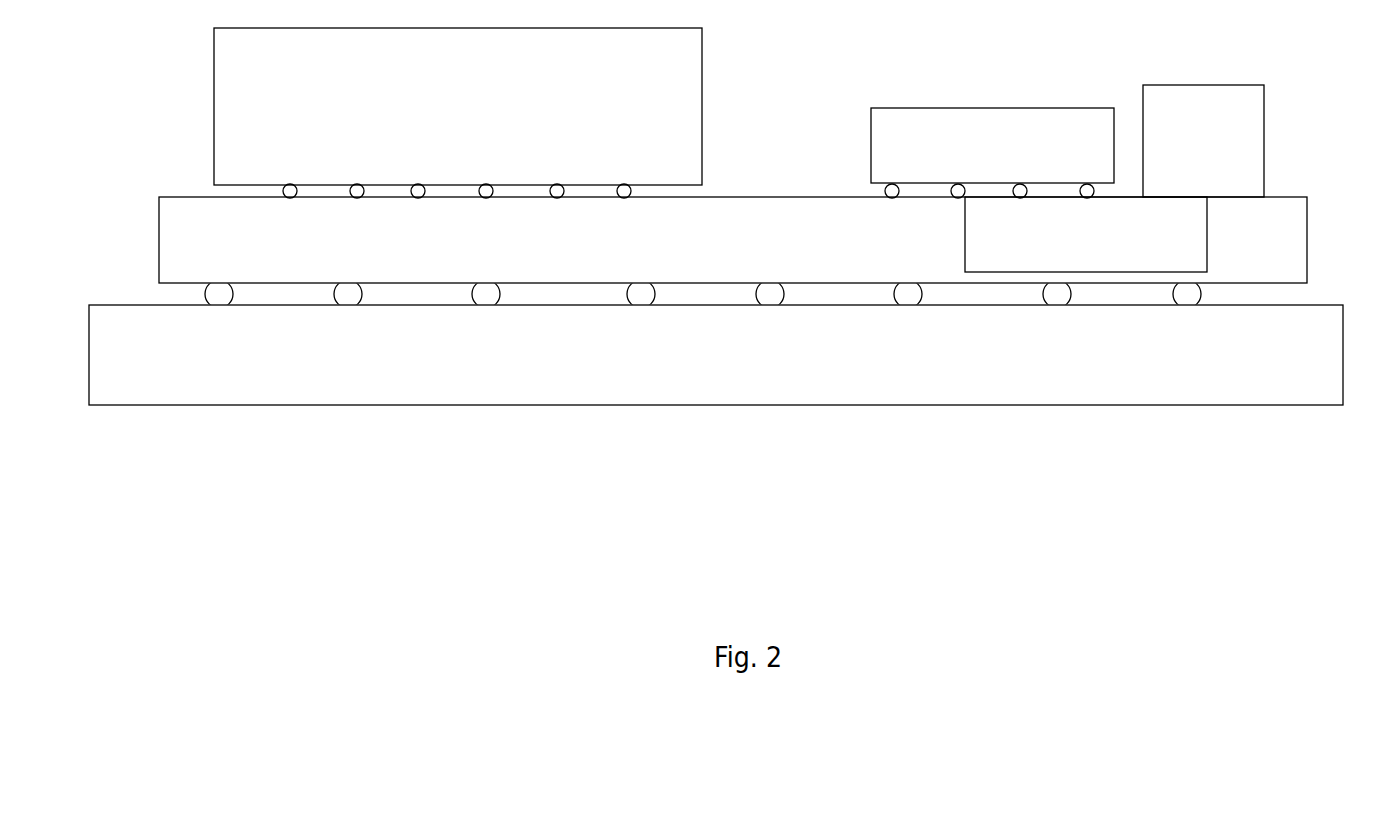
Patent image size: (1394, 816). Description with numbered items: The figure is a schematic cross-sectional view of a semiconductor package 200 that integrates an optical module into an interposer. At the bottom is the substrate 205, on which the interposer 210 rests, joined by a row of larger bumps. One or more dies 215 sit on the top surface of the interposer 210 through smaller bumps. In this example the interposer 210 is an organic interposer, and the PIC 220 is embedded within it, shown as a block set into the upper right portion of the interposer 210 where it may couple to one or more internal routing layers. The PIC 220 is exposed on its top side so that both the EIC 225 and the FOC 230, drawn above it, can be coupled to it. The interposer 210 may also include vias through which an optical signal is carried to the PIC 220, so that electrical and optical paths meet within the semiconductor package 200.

The semiconductor package 200 is at (734, 362).
The substrate 205 is at (863, 369).
The interposer 210 is at (820, 256).
The dies 215 is at (537, 121).
The PIC 220 is at (1145, 251).
The EIC 225 is at (1052, 161).
The FOC 230 is at (1203, 141).